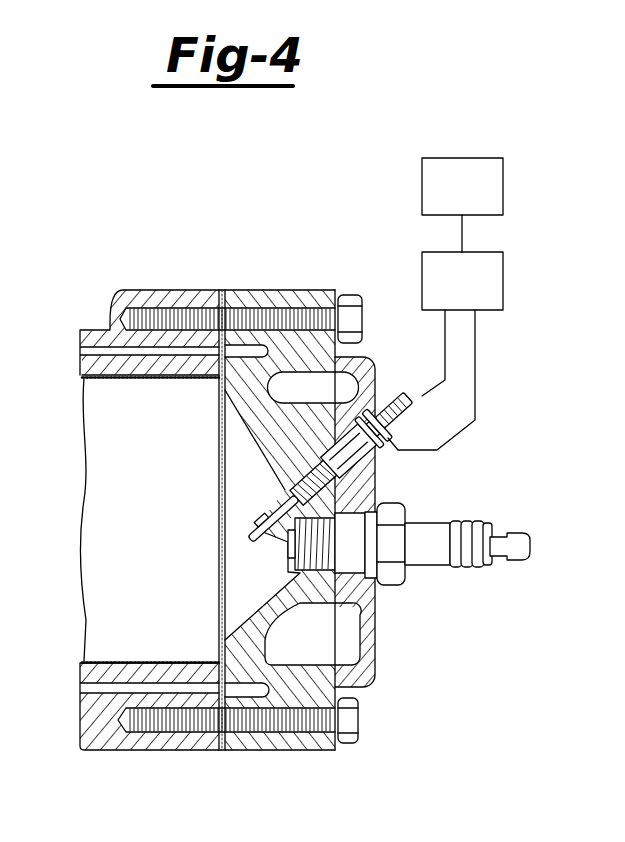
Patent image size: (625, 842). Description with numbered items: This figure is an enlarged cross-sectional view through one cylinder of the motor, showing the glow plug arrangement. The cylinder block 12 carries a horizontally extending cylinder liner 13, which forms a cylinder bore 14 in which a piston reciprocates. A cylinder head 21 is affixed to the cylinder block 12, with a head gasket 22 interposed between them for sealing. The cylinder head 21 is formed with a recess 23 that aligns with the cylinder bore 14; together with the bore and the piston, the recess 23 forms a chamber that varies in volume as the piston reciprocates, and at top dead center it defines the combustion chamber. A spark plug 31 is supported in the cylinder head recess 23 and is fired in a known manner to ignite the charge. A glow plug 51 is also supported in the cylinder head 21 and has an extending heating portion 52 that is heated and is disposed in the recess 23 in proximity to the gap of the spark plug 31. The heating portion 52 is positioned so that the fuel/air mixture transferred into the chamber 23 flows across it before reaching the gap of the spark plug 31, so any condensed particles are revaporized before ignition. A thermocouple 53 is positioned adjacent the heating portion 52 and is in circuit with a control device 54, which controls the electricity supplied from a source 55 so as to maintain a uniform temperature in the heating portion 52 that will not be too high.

The cylinder block 12 is at (103, 737).
The cylinder liner 13 is at (97, 657).
The cylinder bore 14 is at (134, 524).
The cylinder head 21 is at (318, 690).
The head gasket 22 is at (222, 752).
The cylinder head recess 23 is at (258, 585).
The spark plug 31 is at (437, 532).
The glow plug 51 is at (373, 398).
The heating portion 52 is at (248, 539).
The thermocouple 53 is at (258, 522).
The control device 54 is at (475, 300).
The source 55 is at (476, 204).